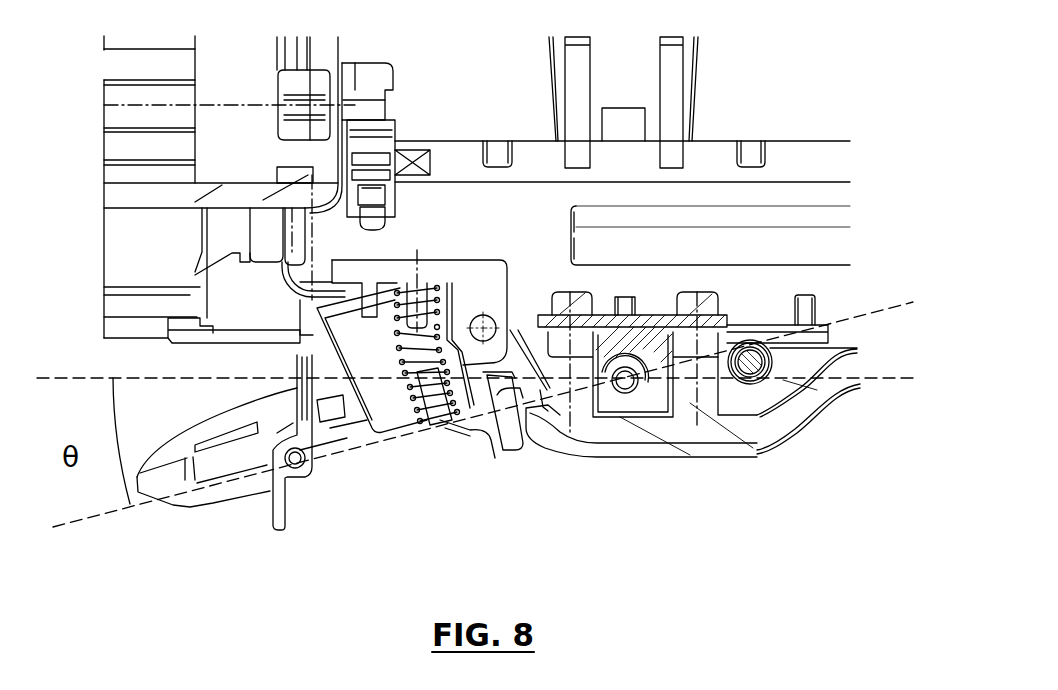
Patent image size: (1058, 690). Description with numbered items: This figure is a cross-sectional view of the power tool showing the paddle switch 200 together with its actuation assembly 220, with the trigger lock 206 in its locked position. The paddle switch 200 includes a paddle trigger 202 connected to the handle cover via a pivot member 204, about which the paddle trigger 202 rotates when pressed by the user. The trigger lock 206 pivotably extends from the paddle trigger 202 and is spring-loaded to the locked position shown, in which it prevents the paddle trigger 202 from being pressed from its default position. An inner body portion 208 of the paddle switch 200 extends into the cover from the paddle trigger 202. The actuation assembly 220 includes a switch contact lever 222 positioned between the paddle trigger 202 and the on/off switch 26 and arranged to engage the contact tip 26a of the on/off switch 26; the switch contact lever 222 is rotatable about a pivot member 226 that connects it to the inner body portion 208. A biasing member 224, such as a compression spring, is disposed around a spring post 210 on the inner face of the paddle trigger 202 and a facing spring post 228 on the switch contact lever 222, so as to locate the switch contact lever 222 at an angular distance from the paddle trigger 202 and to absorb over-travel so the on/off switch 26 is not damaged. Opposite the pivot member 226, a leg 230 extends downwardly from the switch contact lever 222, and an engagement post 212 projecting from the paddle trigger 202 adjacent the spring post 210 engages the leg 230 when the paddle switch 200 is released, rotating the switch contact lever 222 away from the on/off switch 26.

The paddle switch 200 is at (390, 534).
The paddle trigger 202 is at (207, 495).
The pivot member 204 is at (630, 387).
The trigger lock 206 is at (283, 508).
The inner body portion 208 is at (347, 345).
The spring post 210 is at (440, 400).
The engagement post 212 is at (484, 402).
The actuation assembly 220 is at (470, 218).
The switch contact lever 222 is at (462, 268).
The biasing member 224 is at (418, 395).
The pivot member 226 is at (494, 321).
The spring post 228 is at (403, 285).
The leg 230 is at (535, 445).
The on/off switch 26 is at (375, 193).
The contact tip 26a is at (378, 212).